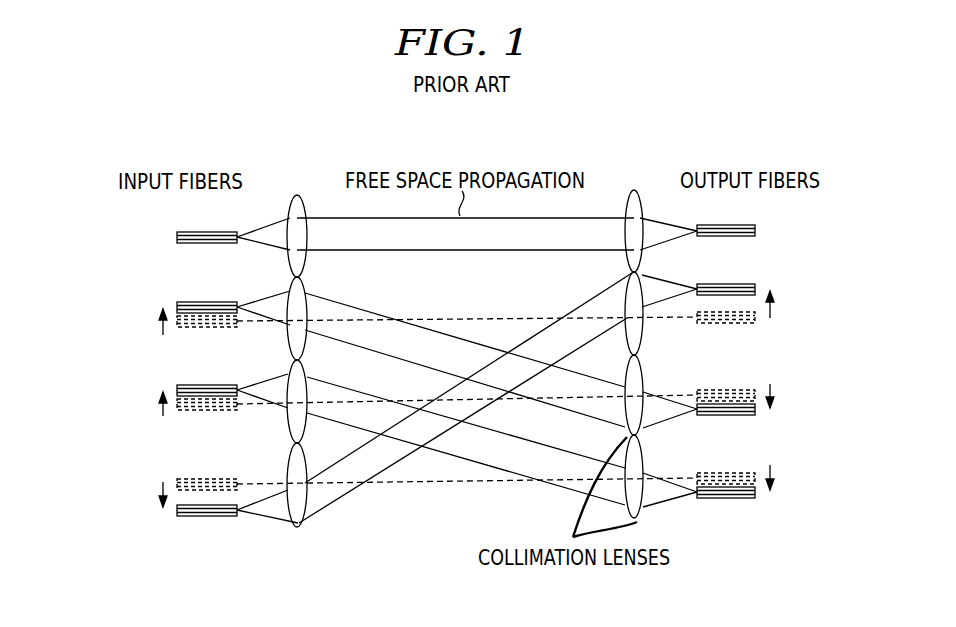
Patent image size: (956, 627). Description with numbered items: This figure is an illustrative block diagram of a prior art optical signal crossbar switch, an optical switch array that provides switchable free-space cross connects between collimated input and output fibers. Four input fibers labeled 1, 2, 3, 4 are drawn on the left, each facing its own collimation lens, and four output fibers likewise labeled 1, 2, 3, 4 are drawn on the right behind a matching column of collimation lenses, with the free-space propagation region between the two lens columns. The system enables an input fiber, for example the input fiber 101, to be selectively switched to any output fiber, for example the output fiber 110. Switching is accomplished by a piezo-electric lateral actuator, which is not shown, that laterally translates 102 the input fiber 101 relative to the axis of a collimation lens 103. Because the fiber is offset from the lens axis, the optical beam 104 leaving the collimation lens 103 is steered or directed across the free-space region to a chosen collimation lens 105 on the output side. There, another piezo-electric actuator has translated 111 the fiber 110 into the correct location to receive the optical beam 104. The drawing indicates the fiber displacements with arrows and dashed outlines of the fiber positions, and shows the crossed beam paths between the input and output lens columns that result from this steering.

The fiber channel 1 is at (469, 235).
The fiber channel 2 is at (469, 351).
The fiber channel 3 is at (469, 439).
The fiber channel 4 is at (469, 494).
The input fiber 101 is at (207, 516).
The lateral translation 102 is at (162, 490).
The collimation lens 103 is at (287, 470).
The optical beam 104 is at (340, 498).
The collimation lens 105 is at (645, 333).
The output fiber 110 is at (722, 283).
The translation 111 is at (772, 308).